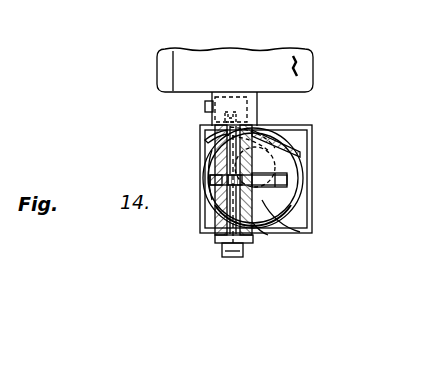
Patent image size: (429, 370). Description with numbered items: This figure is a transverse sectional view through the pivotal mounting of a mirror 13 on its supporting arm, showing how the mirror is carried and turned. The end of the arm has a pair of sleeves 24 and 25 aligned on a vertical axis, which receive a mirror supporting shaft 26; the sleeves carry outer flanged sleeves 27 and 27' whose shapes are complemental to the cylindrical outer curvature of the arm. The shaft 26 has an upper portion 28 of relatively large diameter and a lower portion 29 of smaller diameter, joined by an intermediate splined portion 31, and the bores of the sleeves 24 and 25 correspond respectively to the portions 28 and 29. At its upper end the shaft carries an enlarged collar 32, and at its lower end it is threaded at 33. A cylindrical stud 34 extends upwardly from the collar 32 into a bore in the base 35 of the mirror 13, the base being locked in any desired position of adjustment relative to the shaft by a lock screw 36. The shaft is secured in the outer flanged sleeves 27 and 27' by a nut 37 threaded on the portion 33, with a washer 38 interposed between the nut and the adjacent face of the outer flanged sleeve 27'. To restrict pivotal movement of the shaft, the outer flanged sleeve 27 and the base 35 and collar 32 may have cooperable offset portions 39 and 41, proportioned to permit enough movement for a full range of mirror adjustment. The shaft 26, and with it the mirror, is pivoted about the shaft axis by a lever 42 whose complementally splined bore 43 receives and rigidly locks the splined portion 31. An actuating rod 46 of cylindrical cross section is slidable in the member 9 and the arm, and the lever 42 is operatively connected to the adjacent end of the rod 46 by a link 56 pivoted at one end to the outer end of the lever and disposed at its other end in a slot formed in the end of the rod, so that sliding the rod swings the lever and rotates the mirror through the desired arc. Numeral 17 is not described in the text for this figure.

The member 9 is at (313, 228).
The mirror 13 is at (300, 67).
The bottom wall 17 is at (300, 208).
The sleeve 24 is at (280, 131).
The sleeve 25 is at (256, 234).
The mirror supporting shaft 26 is at (303, 137).
The outer flanged sleeve 27 is at (175, 150).
The outer flanged sleeve 27' is at (184, 233).
The upper portion 28 is at (300, 127).
The lower portion 29 is at (222, 214).
The splined portion 31 is at (213, 185).
The collar 32 is at (258, 108).
The threaded portion 33 is at (215, 237).
The cylindrical stud 34 is at (237, 95).
The base 35 is at (206, 100).
The lock screw 36 is at (206, 107).
The nut 37 is at (224, 257).
The washer 38 is at (244, 247).
The offset portion 39 is at (224, 136).
The offset portion 41 is at (257, 119).
The lever 42 is at (290, 188).
The splined bore 43 is at (215, 159).
The actuating rod 46 is at (274, 223).
The link 56 is at (300, 169).